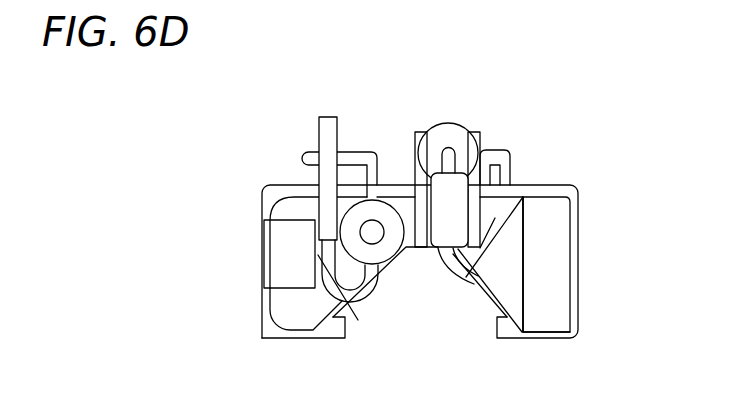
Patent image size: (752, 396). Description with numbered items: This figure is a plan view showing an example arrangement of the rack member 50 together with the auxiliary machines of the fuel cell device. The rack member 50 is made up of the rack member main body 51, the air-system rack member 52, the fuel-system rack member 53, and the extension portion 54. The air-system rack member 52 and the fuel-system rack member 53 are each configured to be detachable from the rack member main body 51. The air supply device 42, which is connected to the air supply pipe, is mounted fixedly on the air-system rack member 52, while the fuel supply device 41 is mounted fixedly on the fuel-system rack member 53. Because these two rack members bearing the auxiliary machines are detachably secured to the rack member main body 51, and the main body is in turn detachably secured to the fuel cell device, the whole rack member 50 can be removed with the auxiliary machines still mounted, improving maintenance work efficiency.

The rack member 50 is at (295, 185).
The fuel supply device 41 is at (365, 212).
The extension portion 54 is at (420, 137).
The rack member main body 51 is at (525, 190).
The air supply device 42 is at (515, 247).
The fuel-system rack member 53 is at (358, 320).
The air-system rack member 52 is at (476, 282).